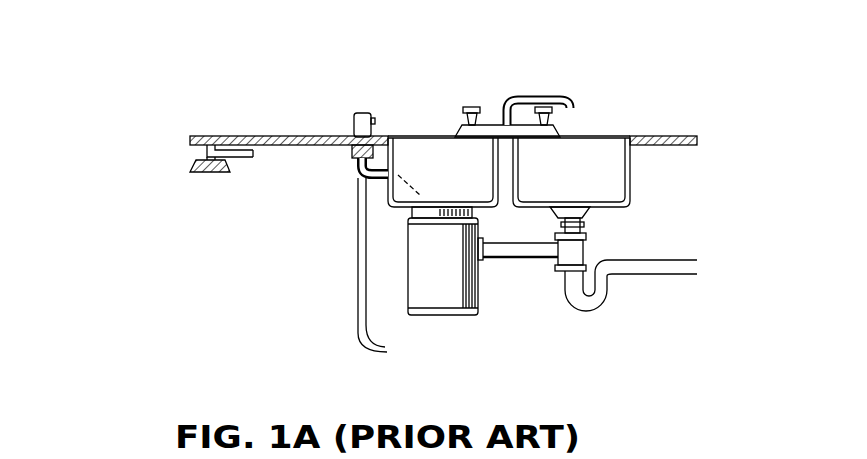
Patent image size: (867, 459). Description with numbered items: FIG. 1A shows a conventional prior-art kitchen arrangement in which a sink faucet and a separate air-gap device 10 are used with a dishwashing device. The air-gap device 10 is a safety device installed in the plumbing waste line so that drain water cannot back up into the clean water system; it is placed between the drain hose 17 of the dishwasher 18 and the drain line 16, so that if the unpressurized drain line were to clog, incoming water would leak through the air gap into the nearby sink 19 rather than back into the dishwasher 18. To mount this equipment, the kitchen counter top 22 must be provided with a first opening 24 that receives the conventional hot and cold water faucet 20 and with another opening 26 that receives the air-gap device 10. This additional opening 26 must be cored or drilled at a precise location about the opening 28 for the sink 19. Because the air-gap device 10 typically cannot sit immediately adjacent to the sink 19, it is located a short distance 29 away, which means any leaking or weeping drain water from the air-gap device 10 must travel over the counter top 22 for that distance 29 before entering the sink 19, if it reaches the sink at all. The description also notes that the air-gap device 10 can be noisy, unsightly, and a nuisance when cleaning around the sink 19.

The air-gap device 10 is at (396, 97).
The drain line 16 is at (438, 228).
The drain hose 17 is at (450, 290).
The dishwasher 18 is at (312, 265).
The sink 19 is at (610, 175).
The hot and cold water faucet 20 is at (518, 90).
The counter top 22 is at (203, 136).
The first opening 24 is at (509, 192).
The opening for the air-gap device 26 is at (353, 158).
The sink opening 28 is at (393, 193).
The distance 29 is at (385, 136).